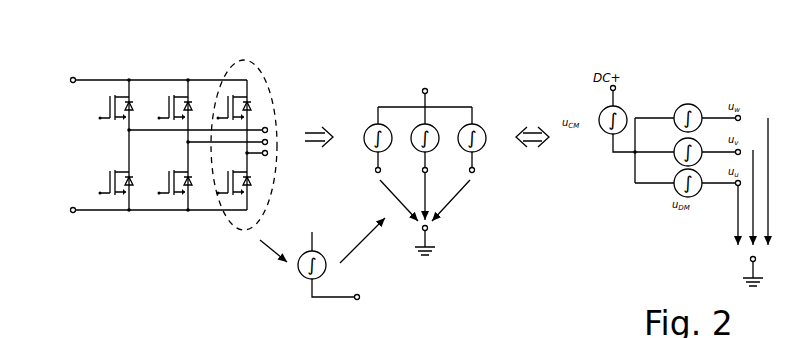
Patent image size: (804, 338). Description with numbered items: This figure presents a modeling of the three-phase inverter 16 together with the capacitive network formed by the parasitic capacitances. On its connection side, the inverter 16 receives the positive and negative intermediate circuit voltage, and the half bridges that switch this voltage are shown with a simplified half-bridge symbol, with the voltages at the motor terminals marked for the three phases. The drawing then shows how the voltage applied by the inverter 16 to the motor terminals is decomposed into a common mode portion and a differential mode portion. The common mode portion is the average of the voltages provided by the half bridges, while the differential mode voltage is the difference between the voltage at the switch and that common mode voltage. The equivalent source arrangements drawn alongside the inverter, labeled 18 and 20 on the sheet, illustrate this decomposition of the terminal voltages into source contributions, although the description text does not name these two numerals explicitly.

The 3-phase inverter 16 is at (192, 62).
The equivalent single voltage source 18 is at (318, 277).
The three-phase equivalent voltage source circuit 20 is at (425, 203).